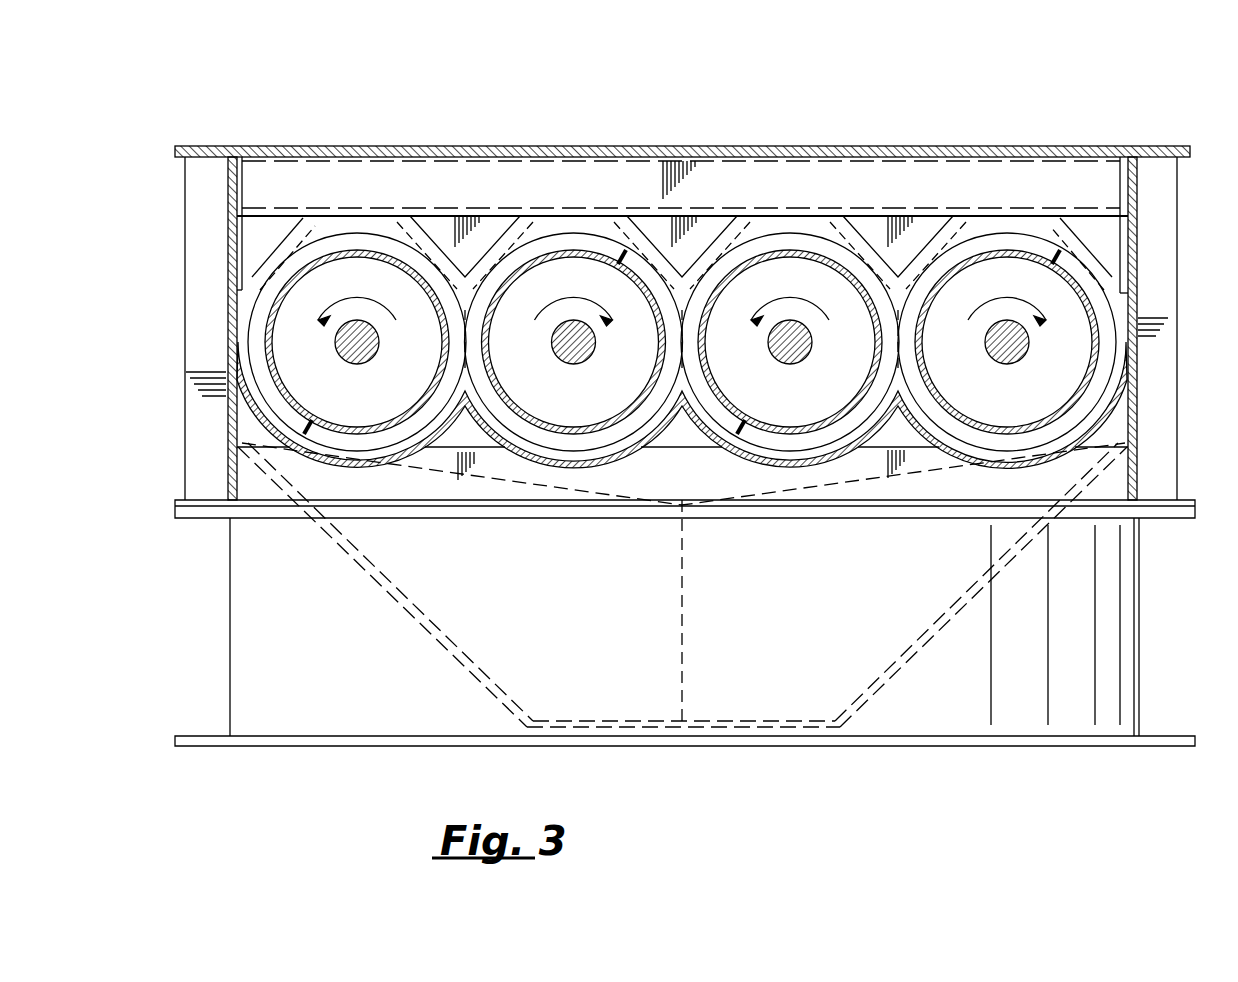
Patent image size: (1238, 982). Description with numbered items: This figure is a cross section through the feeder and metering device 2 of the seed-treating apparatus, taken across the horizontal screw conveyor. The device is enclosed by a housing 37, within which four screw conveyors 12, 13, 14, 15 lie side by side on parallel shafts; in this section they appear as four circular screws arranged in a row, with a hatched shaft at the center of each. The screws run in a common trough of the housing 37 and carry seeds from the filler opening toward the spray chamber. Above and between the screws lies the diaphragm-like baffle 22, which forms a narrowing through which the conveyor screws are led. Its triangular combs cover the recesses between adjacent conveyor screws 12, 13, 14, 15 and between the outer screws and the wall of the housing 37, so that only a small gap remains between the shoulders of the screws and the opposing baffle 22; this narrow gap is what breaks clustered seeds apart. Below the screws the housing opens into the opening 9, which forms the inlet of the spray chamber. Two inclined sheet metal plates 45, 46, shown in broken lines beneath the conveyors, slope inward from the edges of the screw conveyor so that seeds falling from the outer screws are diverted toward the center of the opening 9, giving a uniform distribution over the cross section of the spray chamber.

The feeder and metering device 2 is at (338, 130).
The baffle 22 is at (705, 237).
The housing 37 is at (1138, 253).
The screw conveyor 12 is at (270, 335).
The screw conveyor 13 is at (575, 432).
The screw conveyor 14 is at (782, 432).
The screw conveyor 15 is at (975, 432).
The sheet metal plate 46 is at (462, 665).
The sheet metal plate 45 is at (930, 633).
The opening 9 is at (766, 710).